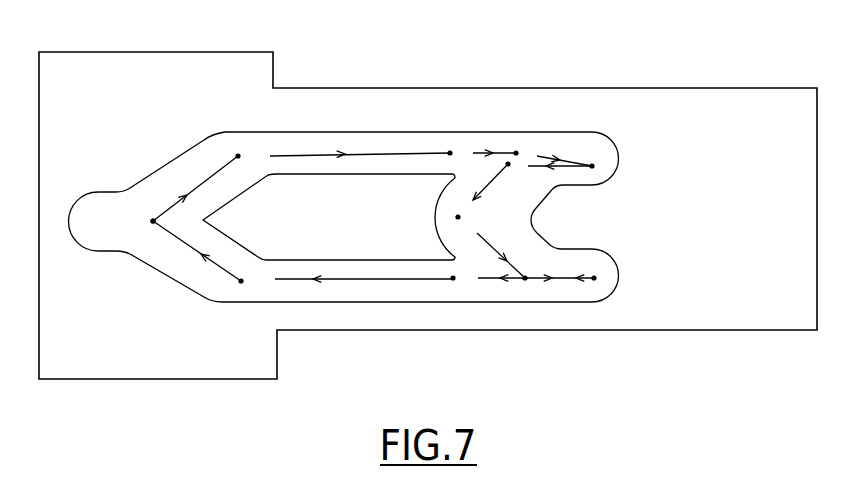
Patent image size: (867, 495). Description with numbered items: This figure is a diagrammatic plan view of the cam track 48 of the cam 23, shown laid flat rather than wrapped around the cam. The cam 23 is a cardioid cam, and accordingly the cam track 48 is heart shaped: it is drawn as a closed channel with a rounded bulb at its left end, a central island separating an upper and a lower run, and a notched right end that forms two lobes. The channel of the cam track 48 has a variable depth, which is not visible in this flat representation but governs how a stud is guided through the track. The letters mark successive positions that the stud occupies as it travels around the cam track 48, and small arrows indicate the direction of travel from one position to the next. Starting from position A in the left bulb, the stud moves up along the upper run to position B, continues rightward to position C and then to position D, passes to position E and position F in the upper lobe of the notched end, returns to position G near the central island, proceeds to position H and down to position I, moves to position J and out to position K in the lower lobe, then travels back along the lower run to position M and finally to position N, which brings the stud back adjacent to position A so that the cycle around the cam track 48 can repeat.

The cam 23 is at (375, 106).
The cam track 48 is at (488, 131).
The stud position A is at (138, 211).
The stud position B is at (248, 157).
The stud position C is at (459, 153).
The stud position D is at (524, 148).
The stud position E is at (515, 178).
The stud position F is at (601, 166).
The stud position G is at (463, 203).
The stud position H is at (491, 252).
The stud position I is at (530, 262).
The stud position J is at (460, 279).
The stud position K is at (603, 279).
The stud position M is at (252, 283).
The stud position N is at (147, 236).